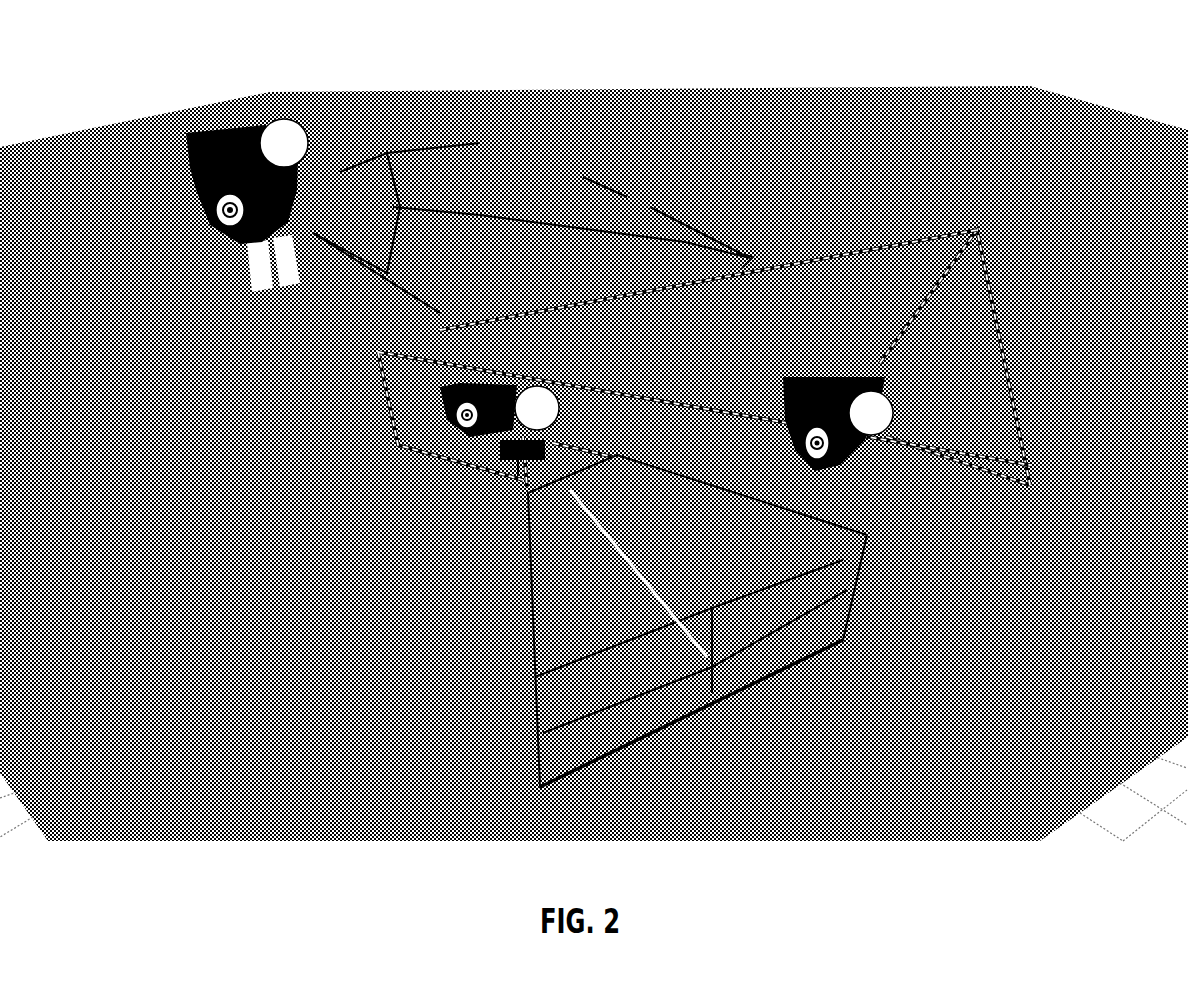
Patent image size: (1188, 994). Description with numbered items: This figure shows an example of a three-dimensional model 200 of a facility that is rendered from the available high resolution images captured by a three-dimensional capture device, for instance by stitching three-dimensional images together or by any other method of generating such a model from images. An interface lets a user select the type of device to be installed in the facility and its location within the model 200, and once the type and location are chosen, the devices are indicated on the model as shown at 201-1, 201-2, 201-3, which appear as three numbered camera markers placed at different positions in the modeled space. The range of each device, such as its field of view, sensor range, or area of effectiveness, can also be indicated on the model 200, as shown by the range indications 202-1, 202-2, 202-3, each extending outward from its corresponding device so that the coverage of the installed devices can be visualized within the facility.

The 3D model 200 is at (467, 88).
The device indication 201-1 is at (280, 119).
The device indication 201-2 is at (892, 412).
The device indication 201-3 is at (557, 407).
The device range indication 202-1 is at (686, 240).
The device range indication 202-2 is at (932, 245).
The device range indication 202-3 is at (538, 768).